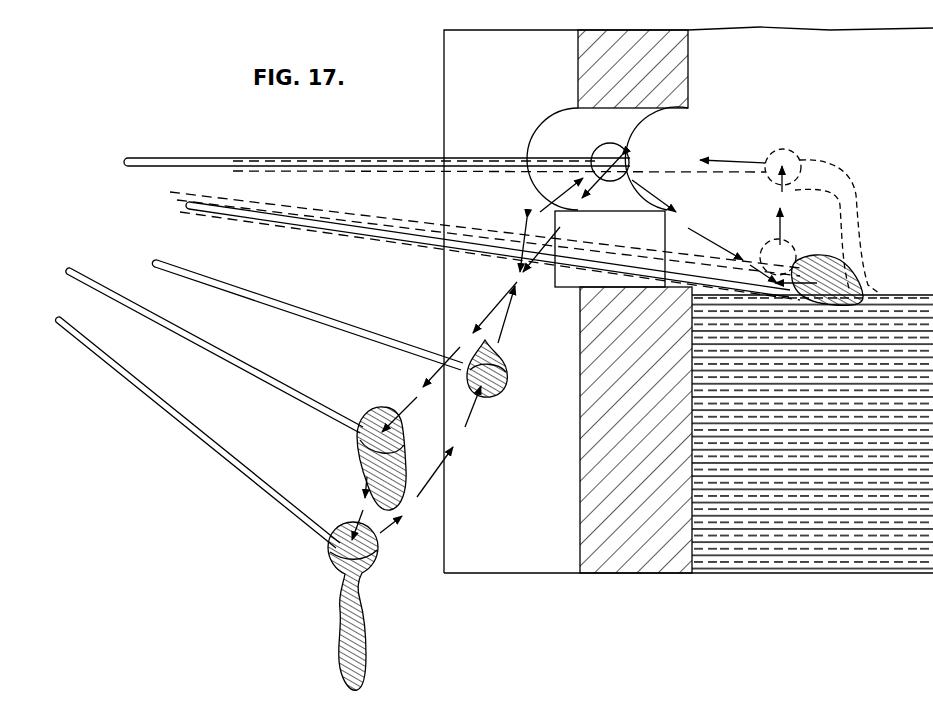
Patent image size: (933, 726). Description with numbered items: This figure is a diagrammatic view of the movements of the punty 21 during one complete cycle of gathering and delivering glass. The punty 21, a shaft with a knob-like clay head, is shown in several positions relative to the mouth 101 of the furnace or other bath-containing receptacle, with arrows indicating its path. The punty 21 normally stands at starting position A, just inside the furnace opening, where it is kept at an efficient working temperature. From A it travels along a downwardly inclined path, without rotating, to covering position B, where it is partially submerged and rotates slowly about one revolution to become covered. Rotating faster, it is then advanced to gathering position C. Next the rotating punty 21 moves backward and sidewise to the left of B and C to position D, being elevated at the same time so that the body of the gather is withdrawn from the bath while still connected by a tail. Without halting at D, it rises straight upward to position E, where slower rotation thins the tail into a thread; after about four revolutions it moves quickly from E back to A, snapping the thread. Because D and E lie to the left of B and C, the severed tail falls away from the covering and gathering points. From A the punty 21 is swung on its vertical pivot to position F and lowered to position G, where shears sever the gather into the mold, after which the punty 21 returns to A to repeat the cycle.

The punty 21 is at (381, 157).
The mouth of the furnace 101 is at (548, 131).
The starting position A is at (612, 143).
The covering position B is at (786, 278).
The gathering position C is at (850, 282).
The position D is at (790, 241).
The position E is at (801, 156).
The position F is at (381, 407).
The position G is at (381, 553).